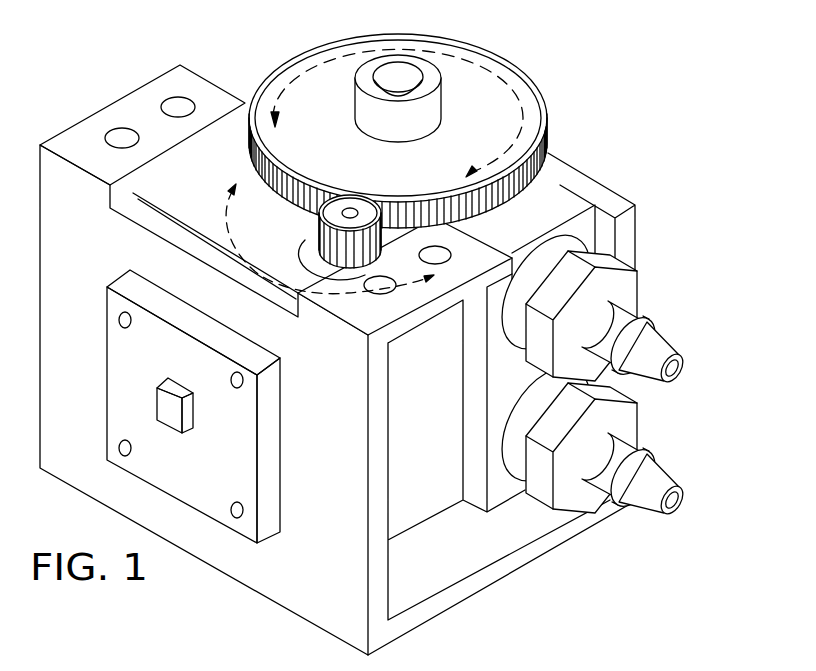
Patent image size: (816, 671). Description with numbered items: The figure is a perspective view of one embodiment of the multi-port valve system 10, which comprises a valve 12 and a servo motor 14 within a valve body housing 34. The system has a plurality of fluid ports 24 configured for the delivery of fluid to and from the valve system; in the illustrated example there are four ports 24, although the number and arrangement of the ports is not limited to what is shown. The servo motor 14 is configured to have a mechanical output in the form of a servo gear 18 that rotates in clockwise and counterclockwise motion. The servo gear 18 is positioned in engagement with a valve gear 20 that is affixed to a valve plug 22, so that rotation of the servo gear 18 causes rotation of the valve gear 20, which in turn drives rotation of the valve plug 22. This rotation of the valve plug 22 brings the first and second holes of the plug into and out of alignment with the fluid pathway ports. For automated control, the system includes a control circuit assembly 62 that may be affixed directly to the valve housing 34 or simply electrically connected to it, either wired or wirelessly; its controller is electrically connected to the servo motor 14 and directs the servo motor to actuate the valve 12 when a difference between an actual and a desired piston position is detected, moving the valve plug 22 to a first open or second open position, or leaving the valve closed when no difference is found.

The multi-port valve system 10 is at (562, 187).
The valve 12 is at (407, 70).
The servo motor 14 is at (435, 485).
The servo gear 18 is at (368, 213).
The valve gear 20 is at (532, 110).
The valve plug 22 is at (407, 72).
The fluid ports 24 is at (673, 350).
The valve body housing 34 is at (148, 105).
The control circuit assembly 62 is at (275, 507).